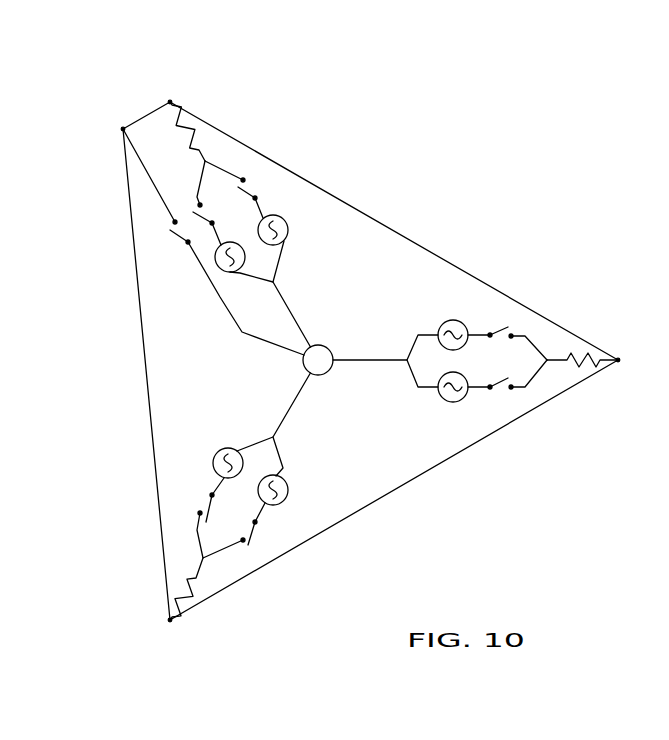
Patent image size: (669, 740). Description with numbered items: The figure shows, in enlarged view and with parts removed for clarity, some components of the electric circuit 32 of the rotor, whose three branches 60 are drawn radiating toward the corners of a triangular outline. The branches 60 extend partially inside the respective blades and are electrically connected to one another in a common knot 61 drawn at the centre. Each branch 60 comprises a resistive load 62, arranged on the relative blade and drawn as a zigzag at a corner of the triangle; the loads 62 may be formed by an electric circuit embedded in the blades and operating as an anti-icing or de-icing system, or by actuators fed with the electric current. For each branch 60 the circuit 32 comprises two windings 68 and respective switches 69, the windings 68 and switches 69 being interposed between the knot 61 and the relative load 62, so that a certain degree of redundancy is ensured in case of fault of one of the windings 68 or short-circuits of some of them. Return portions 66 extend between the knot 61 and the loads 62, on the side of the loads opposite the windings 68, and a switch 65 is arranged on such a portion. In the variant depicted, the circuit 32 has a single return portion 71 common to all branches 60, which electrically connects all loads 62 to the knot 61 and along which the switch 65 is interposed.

The electric circuit 32 is at (265, 128).
The branch 60 is at (222, 150).
The common knot 61 is at (318, 363).
The resistive load 62 is at (179, 146).
The switch 65 is at (174, 232).
The return portion 66 is at (220, 297).
The winding 68 is at (286, 236).
The switch 69 is at (254, 186).
The common return portion 71 is at (189, 265).